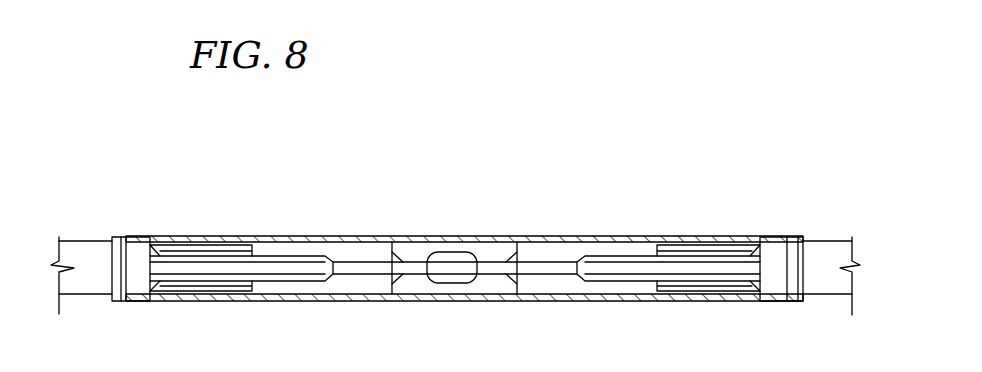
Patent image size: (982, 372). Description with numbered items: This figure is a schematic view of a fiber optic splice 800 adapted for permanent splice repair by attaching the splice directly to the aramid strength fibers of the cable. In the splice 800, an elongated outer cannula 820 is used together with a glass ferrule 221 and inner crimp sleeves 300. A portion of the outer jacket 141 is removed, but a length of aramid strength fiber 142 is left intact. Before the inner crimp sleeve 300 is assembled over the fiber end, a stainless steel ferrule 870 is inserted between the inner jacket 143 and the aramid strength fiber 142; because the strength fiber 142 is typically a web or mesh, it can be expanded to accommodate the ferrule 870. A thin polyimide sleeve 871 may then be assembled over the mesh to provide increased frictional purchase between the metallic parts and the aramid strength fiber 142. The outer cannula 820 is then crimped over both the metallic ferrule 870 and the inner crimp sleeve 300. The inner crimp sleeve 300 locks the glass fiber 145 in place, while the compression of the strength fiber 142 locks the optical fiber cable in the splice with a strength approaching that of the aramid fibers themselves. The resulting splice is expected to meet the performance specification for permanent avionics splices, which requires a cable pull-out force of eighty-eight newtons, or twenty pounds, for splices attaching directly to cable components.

The fiber optic splice 800 is at (409, 141).
The outer jacket 141 is at (90, 245).
The glass ferrule 221 is at (493, 252).
The elongated outer cannula 820 is at (147, 237).
The thin polyimide sleeve 871 is at (225, 299).
The aramid strength fiber 142 is at (212, 247).
The stainless steel ferrule 870 is at (198, 288).
The inner jacket 143 is at (293, 258).
The inner crimp sleeve 300 is at (366, 262).
The glass fiber 145 is at (414, 266).